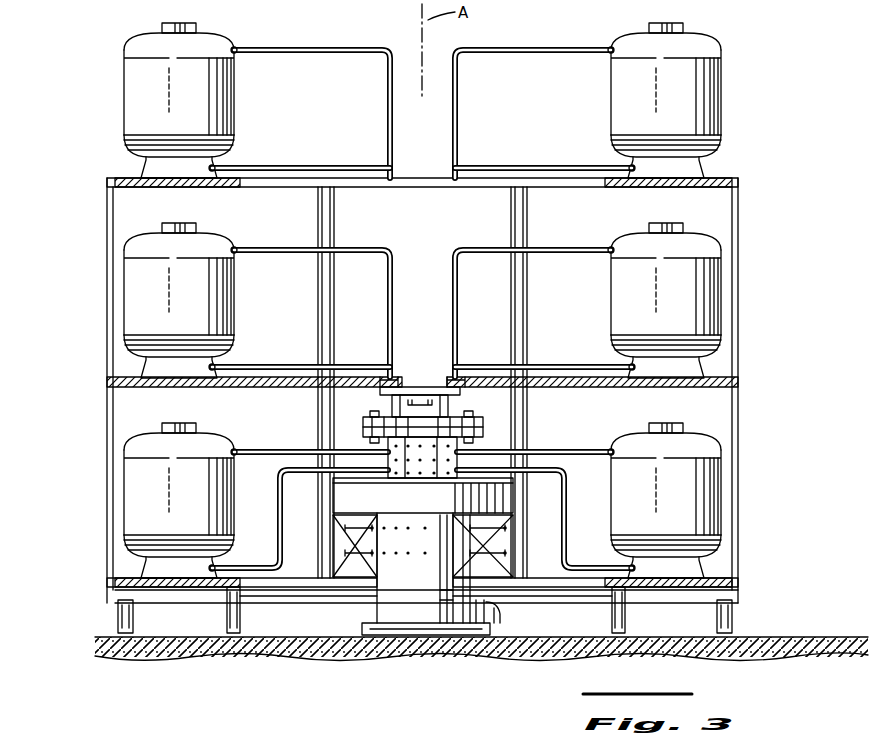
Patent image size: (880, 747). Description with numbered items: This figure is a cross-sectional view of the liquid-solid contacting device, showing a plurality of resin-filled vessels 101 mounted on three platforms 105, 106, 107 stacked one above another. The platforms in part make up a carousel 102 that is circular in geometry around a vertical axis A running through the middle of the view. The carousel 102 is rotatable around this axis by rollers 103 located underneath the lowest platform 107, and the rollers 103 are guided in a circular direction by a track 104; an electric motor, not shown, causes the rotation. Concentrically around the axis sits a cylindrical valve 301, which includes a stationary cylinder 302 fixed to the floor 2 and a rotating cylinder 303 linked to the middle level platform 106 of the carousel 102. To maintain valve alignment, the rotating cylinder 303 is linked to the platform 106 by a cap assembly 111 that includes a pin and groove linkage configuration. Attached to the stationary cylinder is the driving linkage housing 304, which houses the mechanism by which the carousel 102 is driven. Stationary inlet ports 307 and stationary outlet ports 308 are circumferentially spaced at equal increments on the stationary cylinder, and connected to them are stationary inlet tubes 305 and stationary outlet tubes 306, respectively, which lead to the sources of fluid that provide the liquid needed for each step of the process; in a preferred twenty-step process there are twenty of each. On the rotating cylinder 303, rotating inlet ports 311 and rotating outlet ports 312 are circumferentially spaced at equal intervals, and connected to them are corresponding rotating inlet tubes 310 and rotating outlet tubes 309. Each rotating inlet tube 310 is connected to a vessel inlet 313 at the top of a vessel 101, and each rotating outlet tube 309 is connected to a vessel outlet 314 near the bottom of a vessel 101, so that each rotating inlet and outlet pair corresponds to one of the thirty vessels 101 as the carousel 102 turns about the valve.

The floor 2 is at (806, 652).
The resin-filled vessel 101 is at (124, 100).
The carousel 102 is at (742, 270).
The roller 103 is at (733, 618).
The track 104 is at (735, 596).
The upper platform 105 is at (720, 178).
The middle level platform 106 is at (742, 382).
The lower platform 107 is at (735, 578).
The cap assembly 111 is at (420, 395).
The cylindrical valve 301 is at (380, 630).
The stationary cylinder 302 is at (447, 605).
The rotating cylinder 303 is at (375, 425).
The driving linkage housing 304 is at (333, 490).
The stationary inlet tube 305 is at (478, 640).
The stationary outlet tube 306 is at (495, 625).
The stationary inlet port 307 is at (400, 540).
The stationary outlet port 308 is at (352, 565).
The rotating outlet tube 309 is at (290, 167).
The rotating inlet tube 310 is at (295, 50).
The rotating inlet port 311 is at (386, 377).
The rotating outlet port 312 is at (458, 377).
The vessel inlet 313 is at (238, 49).
The vessel outlet 314 is at (216, 165).